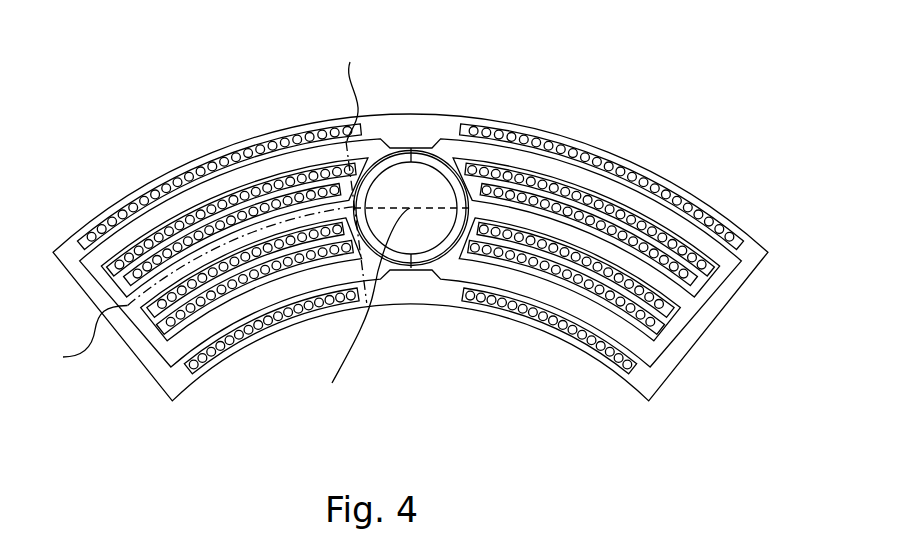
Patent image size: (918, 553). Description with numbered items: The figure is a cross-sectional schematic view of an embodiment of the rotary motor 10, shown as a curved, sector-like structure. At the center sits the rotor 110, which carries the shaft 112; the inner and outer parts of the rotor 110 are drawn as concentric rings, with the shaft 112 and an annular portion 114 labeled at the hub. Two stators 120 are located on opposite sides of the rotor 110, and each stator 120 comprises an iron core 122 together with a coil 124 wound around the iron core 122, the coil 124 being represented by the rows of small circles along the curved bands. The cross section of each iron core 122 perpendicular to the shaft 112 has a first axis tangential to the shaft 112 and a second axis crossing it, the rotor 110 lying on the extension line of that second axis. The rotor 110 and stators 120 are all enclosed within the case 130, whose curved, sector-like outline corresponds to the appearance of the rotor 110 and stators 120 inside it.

The lighting device 10 is at (126, 114).
The rotor 110 is at (460, 399).
The shaft 112 is at (398, 233).
The annular ring 114 is at (420, 258).
The stator 120 is at (620, 47).
The iron core 122 is at (507, 160).
The coil 124 is at (622, 212).
The case 130 is at (420, 114).